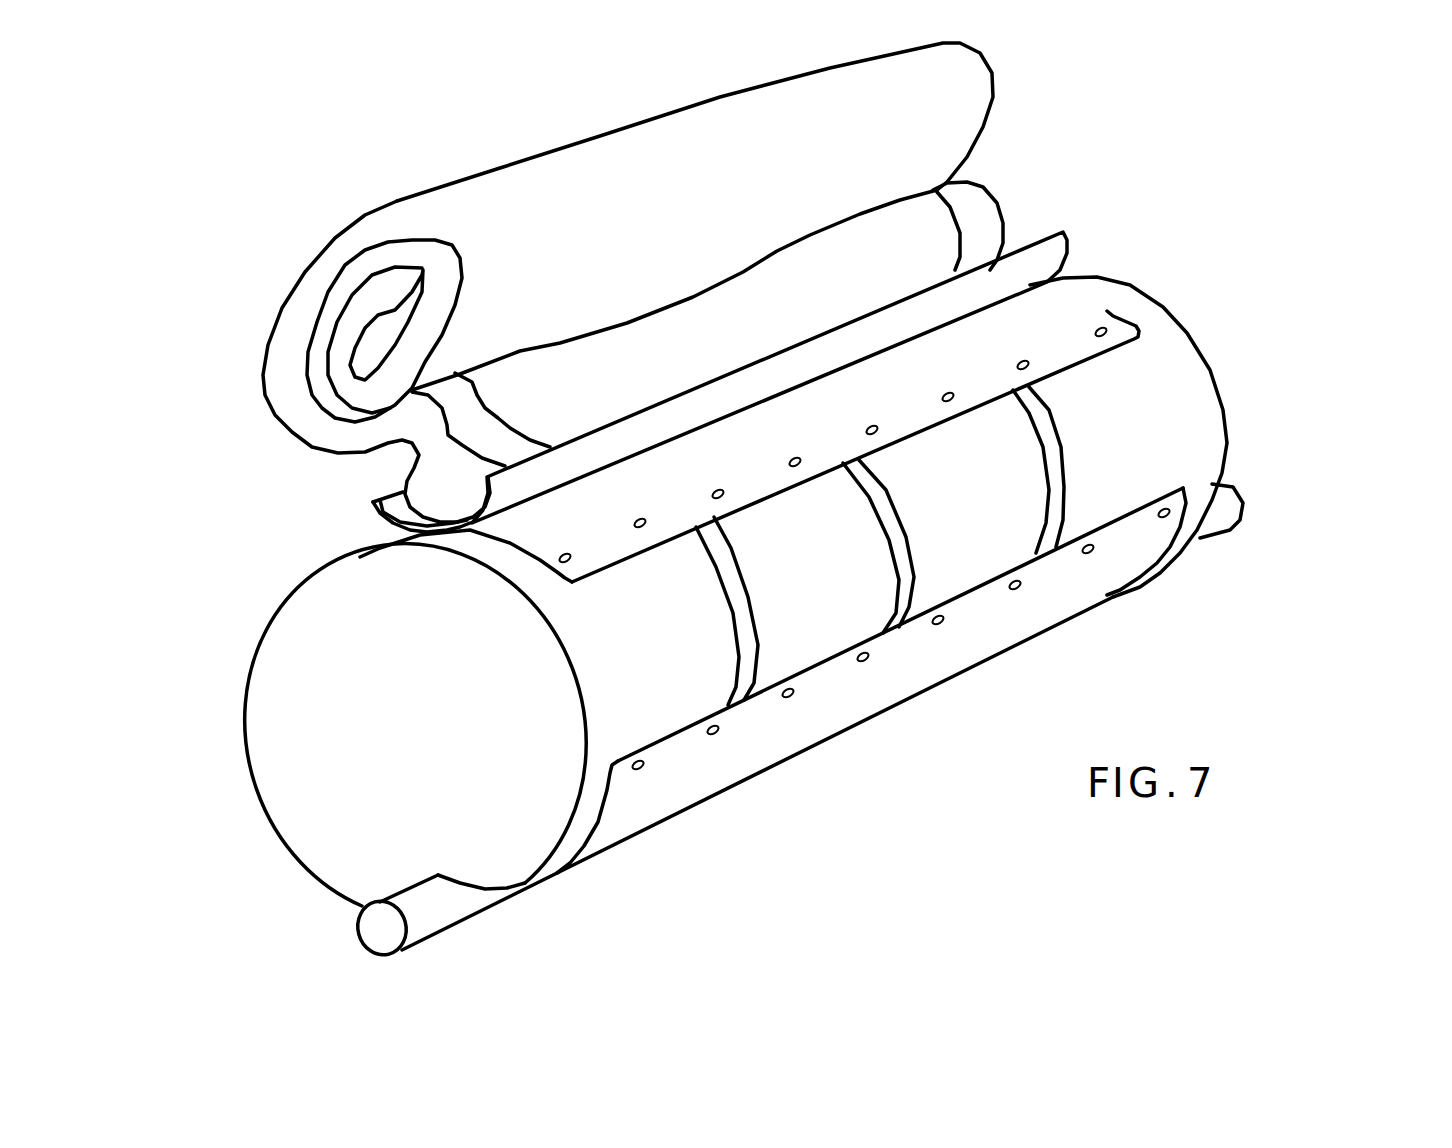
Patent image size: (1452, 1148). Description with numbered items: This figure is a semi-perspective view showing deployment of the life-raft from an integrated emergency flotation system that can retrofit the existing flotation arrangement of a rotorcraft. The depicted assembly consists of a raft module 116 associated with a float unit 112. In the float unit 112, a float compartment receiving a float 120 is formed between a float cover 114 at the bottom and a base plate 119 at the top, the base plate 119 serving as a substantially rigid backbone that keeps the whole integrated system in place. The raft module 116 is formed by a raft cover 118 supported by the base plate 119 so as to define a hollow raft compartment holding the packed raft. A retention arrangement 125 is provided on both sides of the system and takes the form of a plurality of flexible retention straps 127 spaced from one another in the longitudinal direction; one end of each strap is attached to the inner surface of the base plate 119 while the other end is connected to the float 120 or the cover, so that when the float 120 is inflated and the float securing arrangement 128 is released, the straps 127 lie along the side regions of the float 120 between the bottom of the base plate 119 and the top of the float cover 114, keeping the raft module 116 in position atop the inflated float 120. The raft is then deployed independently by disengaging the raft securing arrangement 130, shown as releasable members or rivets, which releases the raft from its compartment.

The float unit 112 is at (1233, 386).
The float cover 114 is at (732, 778).
The raft module 116 is at (628, 282).
The raft cover 118 is at (769, 377).
The base plate 119 is at (750, 393).
The float 120 is at (351, 725).
The retention arrangement 125 is at (871, 680).
The retention straps 127 is at (920, 544).
The float securing arrangement 128 is at (864, 548).
The raft securing arrangement 130 is at (669, 327).